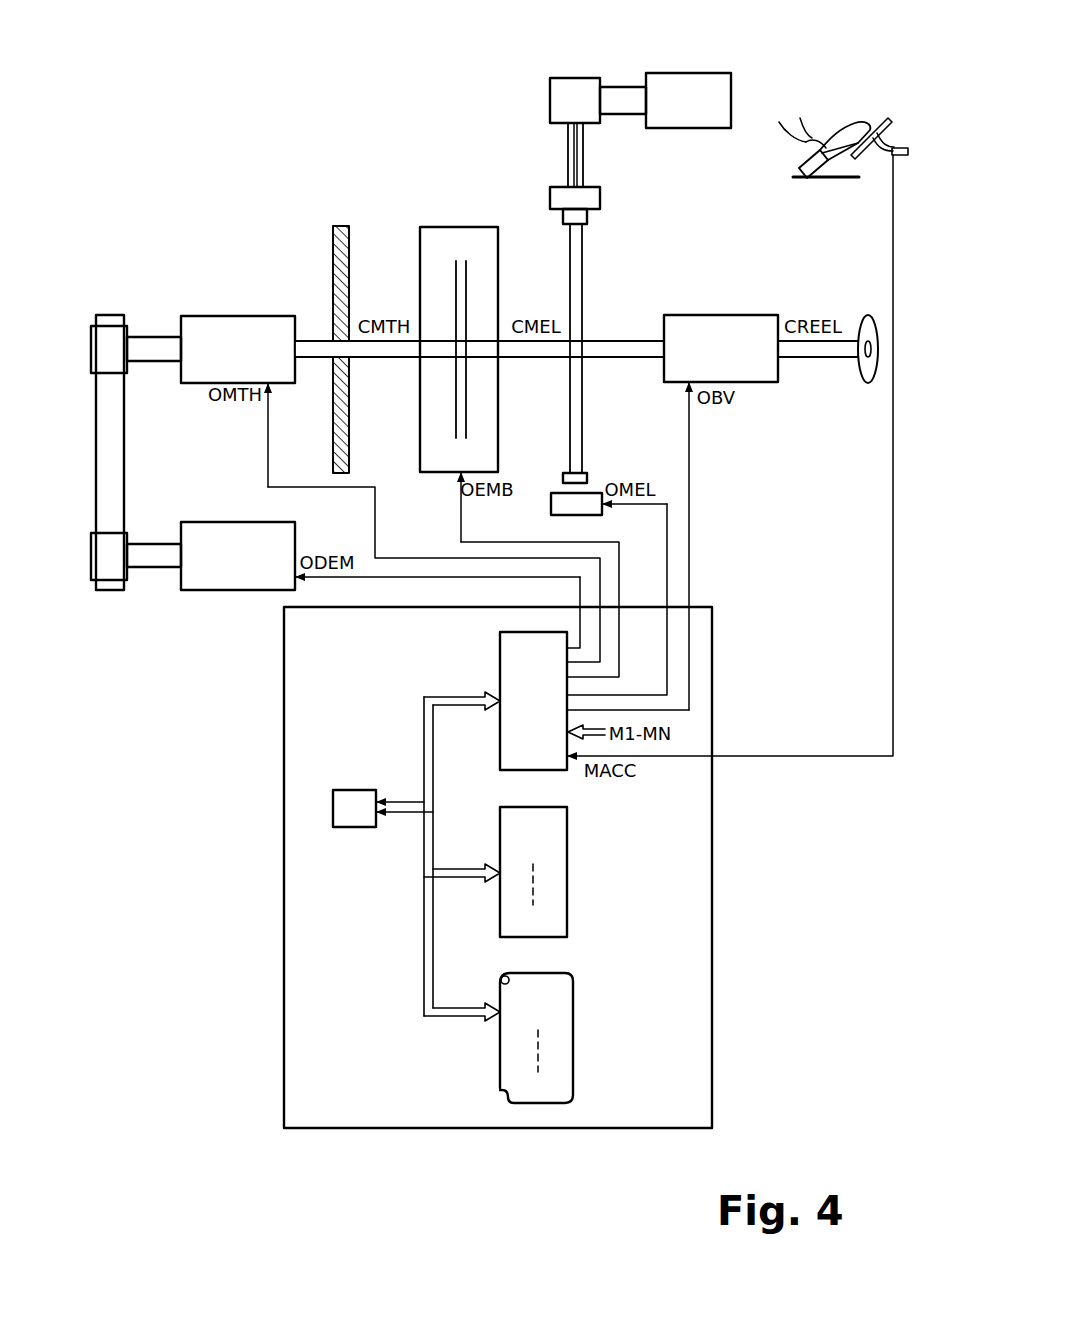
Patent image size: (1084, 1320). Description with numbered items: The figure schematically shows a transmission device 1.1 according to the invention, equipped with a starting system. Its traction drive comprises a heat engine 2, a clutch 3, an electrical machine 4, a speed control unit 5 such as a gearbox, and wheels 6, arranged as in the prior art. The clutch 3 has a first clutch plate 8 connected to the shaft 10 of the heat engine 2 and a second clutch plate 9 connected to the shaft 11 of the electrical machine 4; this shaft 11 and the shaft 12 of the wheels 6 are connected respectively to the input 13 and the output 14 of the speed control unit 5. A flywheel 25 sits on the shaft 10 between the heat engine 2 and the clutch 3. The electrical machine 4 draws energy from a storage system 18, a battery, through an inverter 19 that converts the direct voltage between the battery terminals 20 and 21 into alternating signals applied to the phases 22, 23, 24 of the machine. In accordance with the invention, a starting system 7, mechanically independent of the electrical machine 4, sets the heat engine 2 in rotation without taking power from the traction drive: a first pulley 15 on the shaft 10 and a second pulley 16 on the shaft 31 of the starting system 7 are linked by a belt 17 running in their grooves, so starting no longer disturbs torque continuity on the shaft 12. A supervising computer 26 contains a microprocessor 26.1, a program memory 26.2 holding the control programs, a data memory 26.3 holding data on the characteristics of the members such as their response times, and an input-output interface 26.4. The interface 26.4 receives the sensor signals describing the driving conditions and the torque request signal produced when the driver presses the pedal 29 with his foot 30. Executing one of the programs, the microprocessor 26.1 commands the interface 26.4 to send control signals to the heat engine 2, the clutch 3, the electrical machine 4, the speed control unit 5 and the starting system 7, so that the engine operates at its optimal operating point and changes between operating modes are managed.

The transmission device 1.1 is at (318, 168).
The heat engine 2 is at (208, 316).
The clutch 3 is at (460, 227).
The electrical machine 4 is at (600, 281).
The speed control unit 5 is at (720, 315).
The wheels 6 is at (867, 315).
The starting system 7 is at (200, 590).
The first clutch plate 8 is at (456, 423).
The second clutch plate 9 is at (466, 395).
The shaft of the heat engine 10 is at (380, 357).
The shaft of the electrical machine 11 is at (622, 341).
The shaft of the wheels 12 is at (806, 360).
The input of the speed control unit 13 is at (664, 352).
The output of the speed control unit 14 is at (778, 347).
The first pulley 15 is at (91, 352).
The second pulley 16 is at (91, 565).
The belt 17 is at (124, 432).
The storage system 18 is at (684, 73).
The inverter 19 is at (576, 78).
The battery terminal 20 is at (617, 87).
The battery terminal 21 is at (628, 114).
The phase of the electrical machine 22 is at (568, 133).
The phase of the electrical machine 23 is at (572, 168).
The phase of the electrical machine 24 is at (585, 140).
The flywheel 25 is at (333, 237).
The supervising computer 26 is at (712, 972).
The microprocessor 26.1 is at (352, 828).
The program memory 26.2 is at (573, 1030).
The data memory 26.3 is at (567, 858).
The input-output interface 26.4 is at (500, 658).
The pedal 29 is at (890, 140).
The foot 30 is at (820, 128).
The shaft of the starting system 31 is at (150, 544).